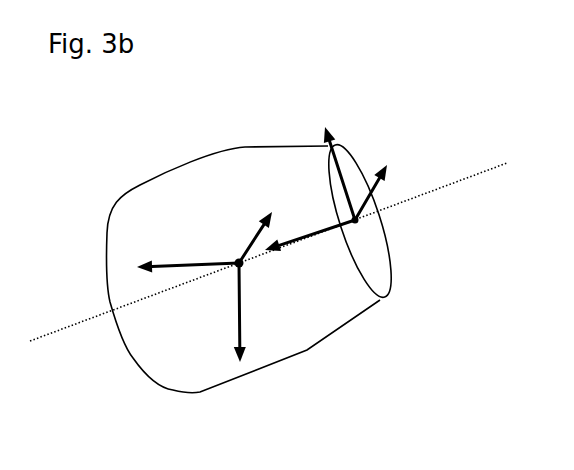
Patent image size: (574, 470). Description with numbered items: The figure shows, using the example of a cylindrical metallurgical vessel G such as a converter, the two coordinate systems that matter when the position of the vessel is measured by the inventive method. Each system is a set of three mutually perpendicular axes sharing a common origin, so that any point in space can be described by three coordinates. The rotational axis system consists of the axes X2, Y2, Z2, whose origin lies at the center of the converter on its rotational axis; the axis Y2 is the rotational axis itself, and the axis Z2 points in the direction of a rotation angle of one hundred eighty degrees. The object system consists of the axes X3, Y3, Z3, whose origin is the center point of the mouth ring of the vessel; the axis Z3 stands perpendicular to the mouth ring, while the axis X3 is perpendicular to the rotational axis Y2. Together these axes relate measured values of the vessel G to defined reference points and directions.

The cylindrical vessel G is at (291, 384).
The X axis of the rotational axis system X2 is at (188, 258).
The Y axis of the rotational axis system Y2 is at (252, 237).
The Z axis of the rotational axis system Z2 is at (247, 312).
The X axis of the object system X3 is at (329, 173).
The Y axis of the object system Y3 is at (379, 192).
The Z axis of the object system Z3 is at (310, 241).